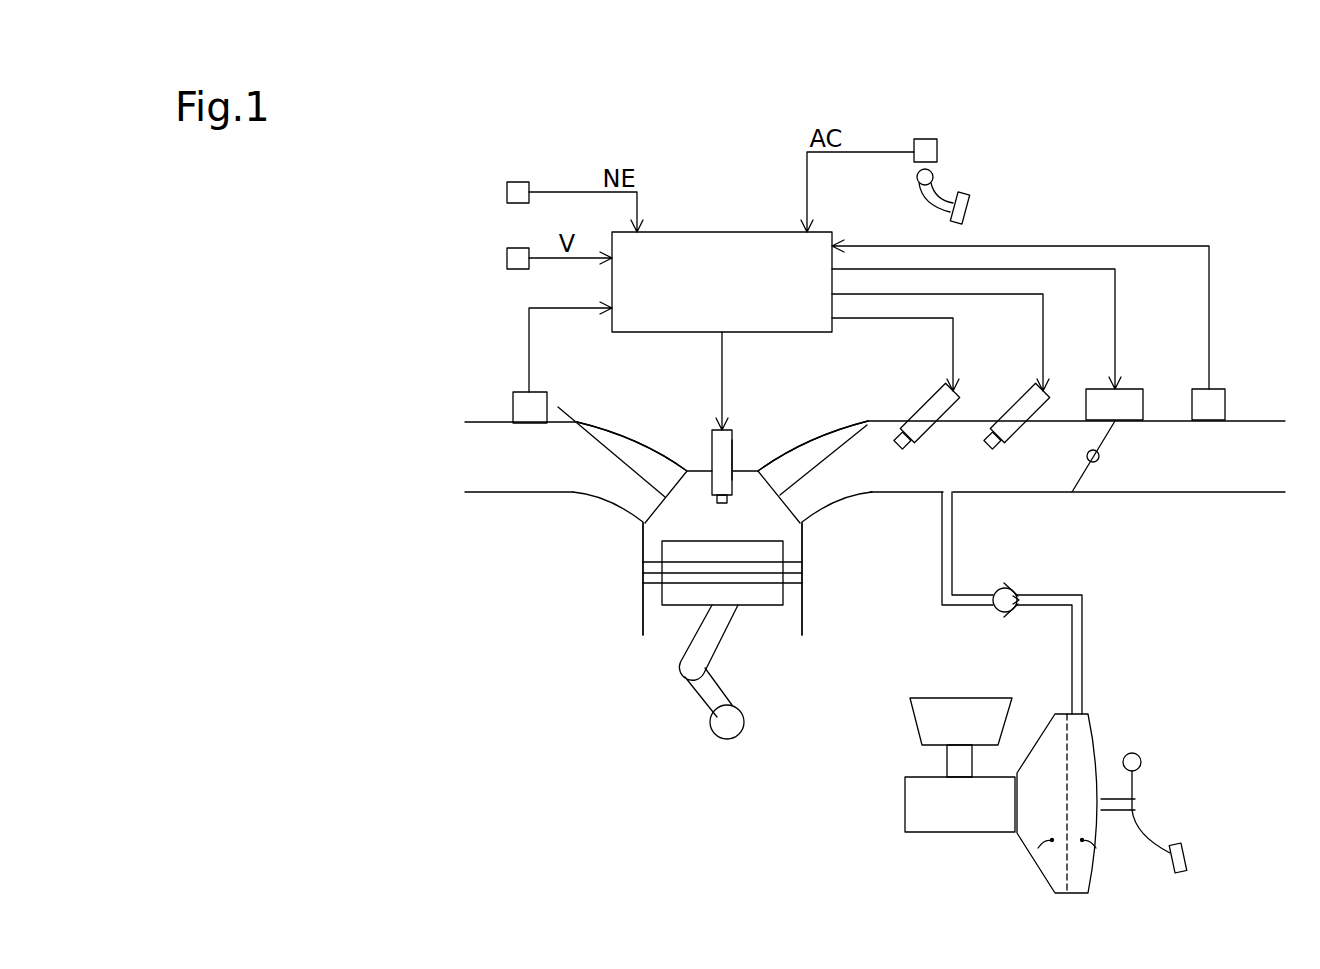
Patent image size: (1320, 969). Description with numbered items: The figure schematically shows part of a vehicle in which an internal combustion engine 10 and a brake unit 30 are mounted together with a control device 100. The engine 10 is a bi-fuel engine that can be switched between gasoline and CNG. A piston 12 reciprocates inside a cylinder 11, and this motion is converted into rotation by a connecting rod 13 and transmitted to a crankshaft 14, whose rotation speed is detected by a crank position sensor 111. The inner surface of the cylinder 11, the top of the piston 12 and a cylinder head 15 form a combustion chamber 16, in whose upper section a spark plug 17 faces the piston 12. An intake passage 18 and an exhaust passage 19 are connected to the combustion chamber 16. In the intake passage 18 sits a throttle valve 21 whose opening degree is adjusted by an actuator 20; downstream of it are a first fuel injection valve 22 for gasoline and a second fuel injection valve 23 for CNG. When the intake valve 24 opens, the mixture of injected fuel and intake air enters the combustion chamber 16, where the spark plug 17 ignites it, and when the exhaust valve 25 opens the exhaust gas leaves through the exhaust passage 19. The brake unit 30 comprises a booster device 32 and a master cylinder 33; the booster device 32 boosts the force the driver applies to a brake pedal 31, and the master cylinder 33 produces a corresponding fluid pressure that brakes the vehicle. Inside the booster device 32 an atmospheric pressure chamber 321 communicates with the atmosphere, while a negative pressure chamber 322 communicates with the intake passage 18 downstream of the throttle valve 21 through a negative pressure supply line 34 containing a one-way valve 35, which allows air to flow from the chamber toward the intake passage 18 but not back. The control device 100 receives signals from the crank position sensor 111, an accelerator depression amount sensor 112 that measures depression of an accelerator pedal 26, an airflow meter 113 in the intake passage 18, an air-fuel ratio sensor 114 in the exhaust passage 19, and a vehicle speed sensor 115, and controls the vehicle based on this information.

The internal combustion engine 10 is at (586, 676).
The cylinder 11 is at (643, 572).
The piston 12 is at (662, 597).
The connecting rod 13 is at (710, 690).
The crankshaft 14 is at (727, 740).
The cylinder head 15 is at (710, 462).
The combustion chamber 16 is at (722, 514).
The spark plug 17 is at (736, 445).
The intake passage 18 is at (868, 496).
The exhaust passage 19 is at (588, 496).
The actuator 20 is at (1128, 386).
The throttle valve 21 is at (1082, 476).
The first fuel injection valve 22 is at (920, 400).
The second fuel injection valve 23 is at (1010, 400).
The intake valve 24 is at (830, 446).
The exhaust valve 25 is at (613, 446).
The accelerator pedal 26 is at (970, 210).
The brake unit 30 is at (1073, 774).
The brake pedal 31 is at (1190, 857).
The booster device 32 is at (1092, 733).
The atmospheric pressure chamber 321 is at (1036, 846).
The negative pressure chamber 322 is at (1097, 848).
The master cylinder 33 is at (950, 835).
The negative pressure supply line 34 is at (1085, 628).
The one-way valve 35 is at (998, 610).
The control device 100 is at (721, 232).
The crank position sensor 111 is at (507, 192).
The accelerator depression amount sensor 112 is at (937, 151).
The airflow meter 113 is at (1227, 407).
The air-fuel ratio sensor 114 is at (513, 410).
The vehicle speed sensor 115 is at (507, 258).